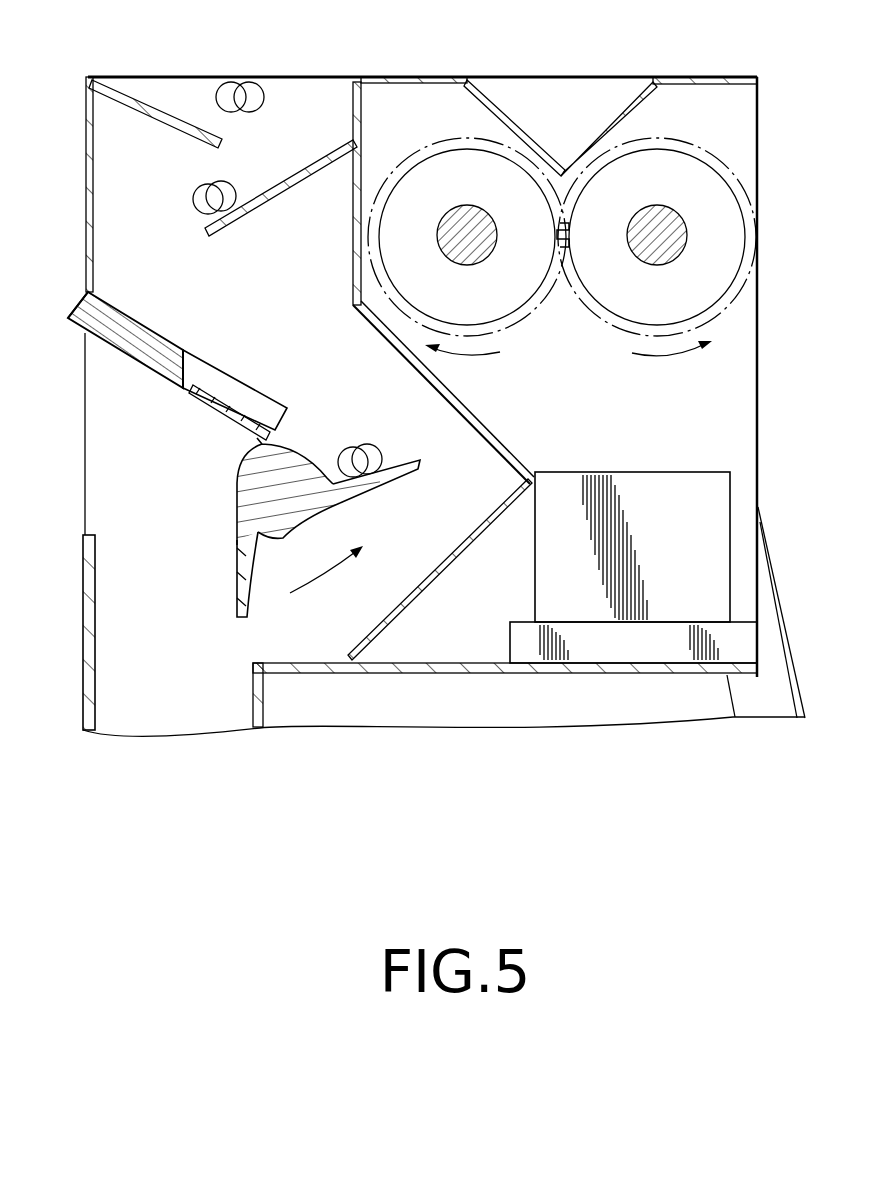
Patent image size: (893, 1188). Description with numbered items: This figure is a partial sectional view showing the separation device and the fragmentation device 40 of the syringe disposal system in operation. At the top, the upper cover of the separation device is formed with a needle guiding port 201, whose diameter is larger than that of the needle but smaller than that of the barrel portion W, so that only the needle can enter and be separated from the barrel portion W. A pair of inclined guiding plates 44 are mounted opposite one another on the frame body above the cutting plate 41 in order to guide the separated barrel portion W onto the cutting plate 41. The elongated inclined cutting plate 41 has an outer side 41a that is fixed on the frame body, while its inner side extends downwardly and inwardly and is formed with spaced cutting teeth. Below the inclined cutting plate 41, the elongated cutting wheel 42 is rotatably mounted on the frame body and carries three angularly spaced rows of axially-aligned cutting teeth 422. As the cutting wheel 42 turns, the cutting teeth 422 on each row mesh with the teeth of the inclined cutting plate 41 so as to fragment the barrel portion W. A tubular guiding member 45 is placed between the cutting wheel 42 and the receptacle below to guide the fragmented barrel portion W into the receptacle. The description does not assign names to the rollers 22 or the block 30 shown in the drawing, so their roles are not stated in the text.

The fragmentation device 40 is at (97, 470).
The inclined guiding plate 44 is at (148, 108).
The barrel portion W is at (240, 95).
The needle guiding port 201 is at (410, 75).
The feed roller 22 is at (730, 222).
The receiving block 30 is at (700, 483).
The inclined cutting plate 41 is at (162, 378).
The outer side 41a is at (80, 312).
The cutting wheel 42 is at (237, 488).
The cutting teeth 422 is at (222, 405).
The tubular guiding member 45 is at (112, 645).